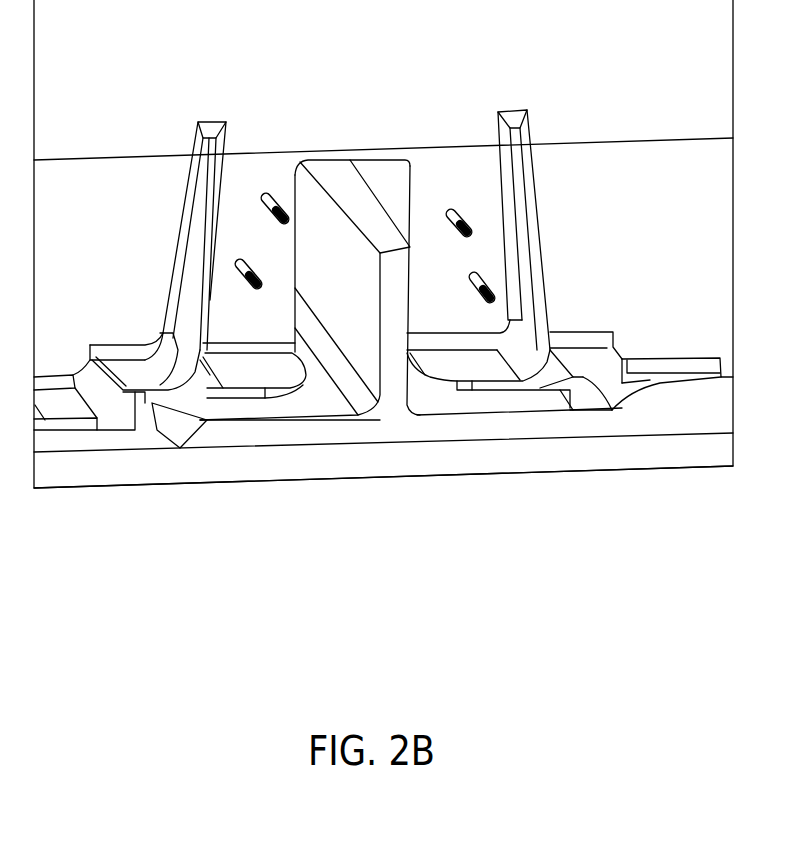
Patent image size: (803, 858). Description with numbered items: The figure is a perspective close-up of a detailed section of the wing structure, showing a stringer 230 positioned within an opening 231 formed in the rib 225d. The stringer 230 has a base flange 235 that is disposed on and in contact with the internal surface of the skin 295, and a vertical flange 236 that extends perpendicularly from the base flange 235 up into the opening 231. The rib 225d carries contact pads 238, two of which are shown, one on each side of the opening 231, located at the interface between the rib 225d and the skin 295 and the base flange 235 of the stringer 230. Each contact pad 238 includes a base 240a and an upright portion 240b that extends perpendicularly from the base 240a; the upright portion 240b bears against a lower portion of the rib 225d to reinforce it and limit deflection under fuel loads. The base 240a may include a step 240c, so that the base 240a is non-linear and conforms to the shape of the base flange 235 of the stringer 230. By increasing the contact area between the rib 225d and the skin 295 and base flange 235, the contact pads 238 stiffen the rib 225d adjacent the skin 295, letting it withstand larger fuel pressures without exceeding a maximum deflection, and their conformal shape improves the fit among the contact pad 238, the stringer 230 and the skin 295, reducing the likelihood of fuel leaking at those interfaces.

The rib 225d is at (647, 235).
The opening 231 is at (300, 172).
The stringer 230 is at (255, 432).
The vertical flange 236 is at (380, 328).
The contact pad 238 is at (197, 400).
The skin 295 is at (420, 456).
The base 240a is at (508, 381).
The upright portion 240b is at (553, 283).
The step 240c is at (617, 352).
The base flange 235 is at (568, 423).